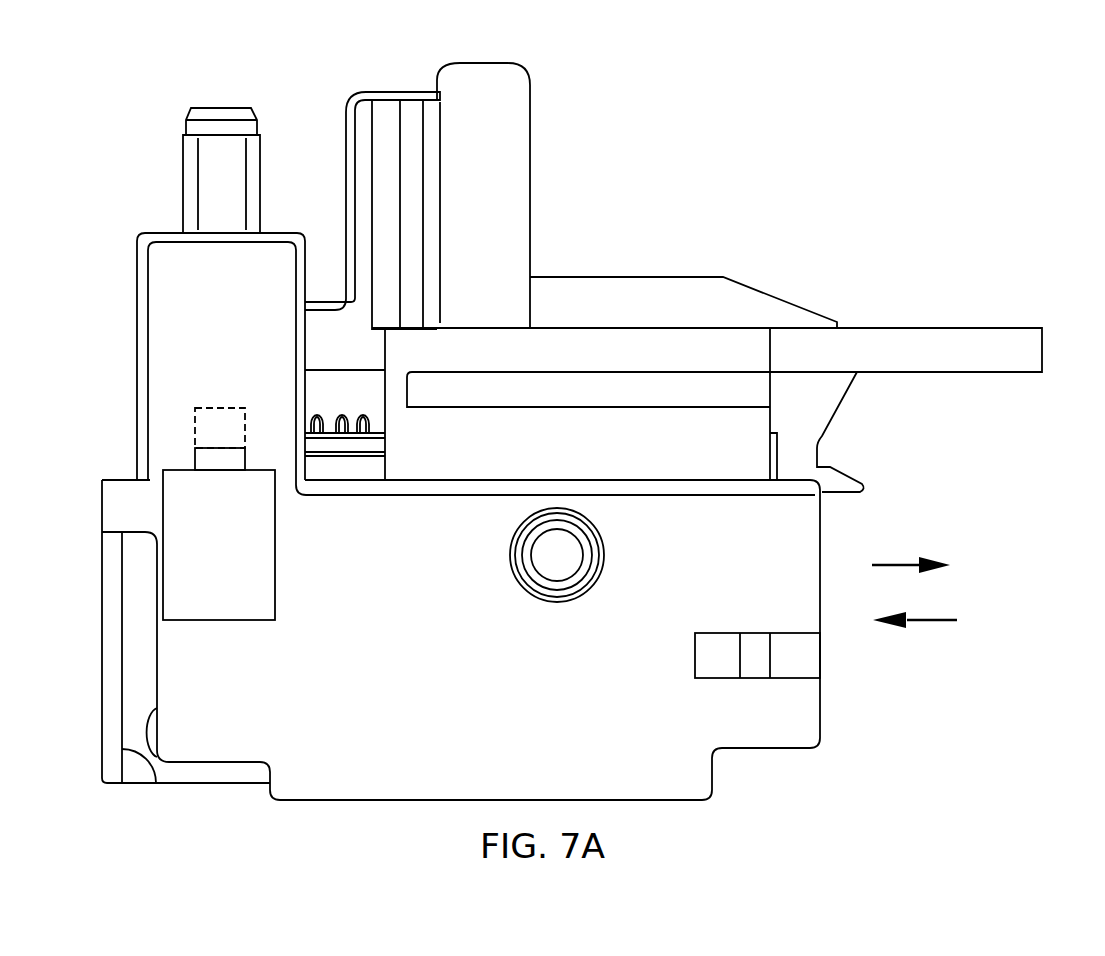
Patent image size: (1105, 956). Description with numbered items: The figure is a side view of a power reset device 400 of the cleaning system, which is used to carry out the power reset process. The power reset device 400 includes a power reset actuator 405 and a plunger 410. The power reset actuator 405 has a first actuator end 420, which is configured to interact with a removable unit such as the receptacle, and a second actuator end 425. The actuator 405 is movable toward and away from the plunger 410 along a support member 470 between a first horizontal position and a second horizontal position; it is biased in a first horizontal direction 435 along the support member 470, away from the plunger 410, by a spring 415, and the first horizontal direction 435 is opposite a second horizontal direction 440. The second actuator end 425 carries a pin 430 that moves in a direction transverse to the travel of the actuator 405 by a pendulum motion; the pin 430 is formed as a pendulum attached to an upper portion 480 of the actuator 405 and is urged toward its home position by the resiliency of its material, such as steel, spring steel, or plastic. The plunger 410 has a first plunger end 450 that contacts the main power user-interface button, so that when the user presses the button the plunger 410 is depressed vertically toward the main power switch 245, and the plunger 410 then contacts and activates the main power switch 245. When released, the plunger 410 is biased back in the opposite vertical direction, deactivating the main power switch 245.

The power reset device 400 is at (794, 111).
The power reset actuator 405 is at (534, 240).
The plunger 410 is at (183, 174).
The spring 415 is at (347, 415).
The first actuator end 420 is at (960, 328).
The second actuator end 425 is at (321, 110).
The pin 430 is at (330, 300).
The first horizontal direction 435 is at (934, 565).
The second horizontal direction 440 is at (935, 620).
The first plunger end 450 is at (218, 108).
The support member 470 is at (797, 530).
The upper portion 480 is at (363, 94).
The main power switch 245 is at (237, 548).